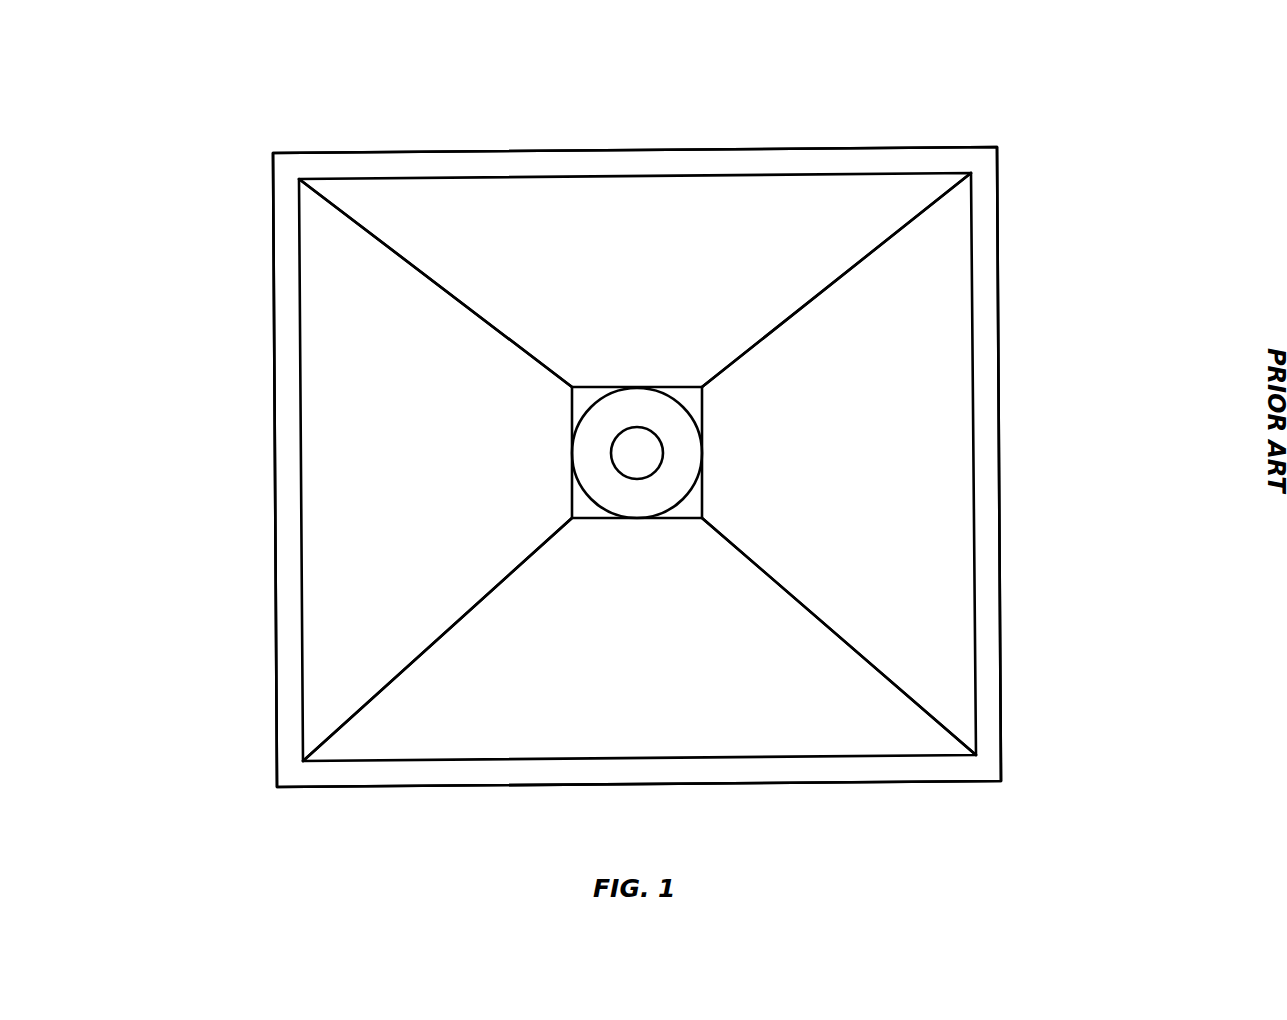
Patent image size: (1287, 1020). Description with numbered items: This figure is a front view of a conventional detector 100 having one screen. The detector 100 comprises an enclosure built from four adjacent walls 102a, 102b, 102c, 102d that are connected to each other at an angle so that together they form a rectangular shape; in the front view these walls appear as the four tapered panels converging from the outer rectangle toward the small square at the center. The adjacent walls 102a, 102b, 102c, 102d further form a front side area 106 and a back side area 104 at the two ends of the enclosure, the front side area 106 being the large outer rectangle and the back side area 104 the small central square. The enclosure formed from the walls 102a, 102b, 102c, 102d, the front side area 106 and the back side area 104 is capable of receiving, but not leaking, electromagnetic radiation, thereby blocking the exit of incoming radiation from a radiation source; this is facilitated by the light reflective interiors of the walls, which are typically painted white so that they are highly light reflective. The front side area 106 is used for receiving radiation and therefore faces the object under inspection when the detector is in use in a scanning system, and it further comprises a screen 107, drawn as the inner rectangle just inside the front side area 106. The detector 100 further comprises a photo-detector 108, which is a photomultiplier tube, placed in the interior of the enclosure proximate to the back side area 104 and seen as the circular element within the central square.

The detector 100 is at (1178, 797).
The adjacent wall 102a is at (379, 455).
The adjacent wall 102b is at (673, 255).
The adjacent wall 102c is at (870, 531).
The adjacent wall 102d is at (665, 678).
The back side area 104 is at (702, 411).
The front side area 106 is at (975, 529).
The screen 107 is at (949, 569).
The photo-detector 108 is at (677, 453).